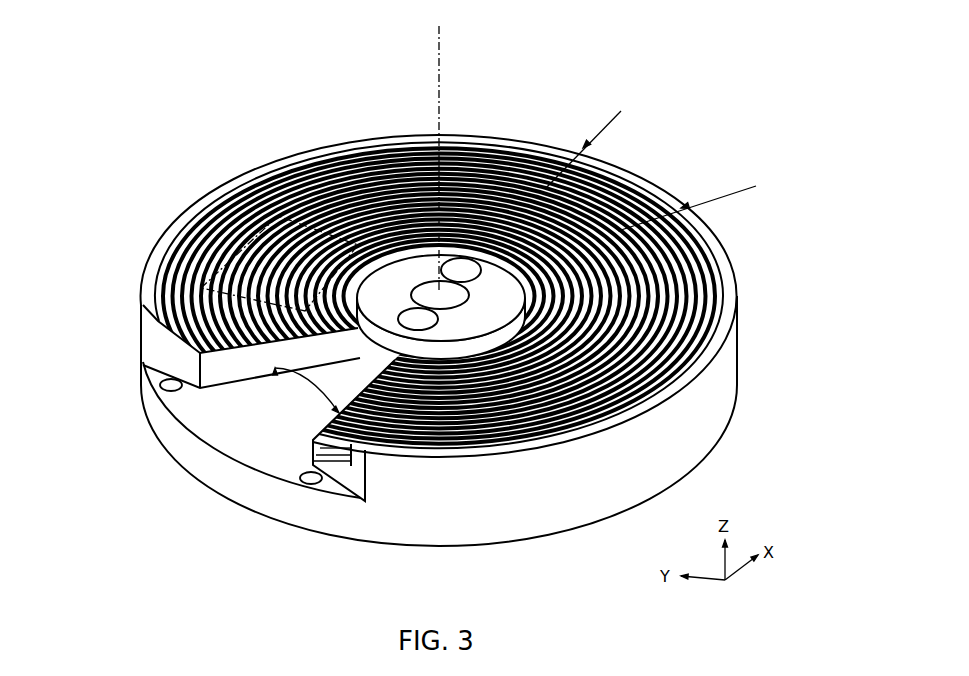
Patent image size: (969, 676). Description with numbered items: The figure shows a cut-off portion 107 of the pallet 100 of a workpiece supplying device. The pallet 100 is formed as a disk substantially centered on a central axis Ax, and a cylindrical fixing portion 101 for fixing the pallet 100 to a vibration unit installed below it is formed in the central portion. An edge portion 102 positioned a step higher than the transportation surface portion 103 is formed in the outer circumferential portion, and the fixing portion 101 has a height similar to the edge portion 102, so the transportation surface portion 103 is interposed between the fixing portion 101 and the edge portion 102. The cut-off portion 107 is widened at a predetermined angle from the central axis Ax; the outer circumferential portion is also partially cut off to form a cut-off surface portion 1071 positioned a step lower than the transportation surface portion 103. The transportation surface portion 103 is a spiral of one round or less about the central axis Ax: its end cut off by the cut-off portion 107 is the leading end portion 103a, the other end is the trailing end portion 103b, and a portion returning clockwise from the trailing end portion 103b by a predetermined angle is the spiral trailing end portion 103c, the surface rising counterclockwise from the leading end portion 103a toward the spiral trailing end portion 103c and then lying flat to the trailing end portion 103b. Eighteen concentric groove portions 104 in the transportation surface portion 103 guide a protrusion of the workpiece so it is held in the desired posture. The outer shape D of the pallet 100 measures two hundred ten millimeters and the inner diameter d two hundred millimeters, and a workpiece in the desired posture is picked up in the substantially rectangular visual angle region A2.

The pallet 100 is at (832, 78).
The fixing portion 101 is at (403, 258).
The edge portion 102 is at (475, 128).
The transportation surface portion 103 is at (648, 247).
The leading end portion 103a is at (312, 415).
The trailing end portion 103b is at (227, 347).
The spiral trailing end portion 103c is at (393, 247).
The groove portions 104 is at (667, 280).
The cut-off portion 107 is at (224, 450).
The cut-off surface portion 1071 is at (240, 430).
The central axis Ax is at (434, 40).
The visual angle region A2 is at (280, 210).
The outer shape D is at (585, 140).
The inner diameter d is at (696, 199).